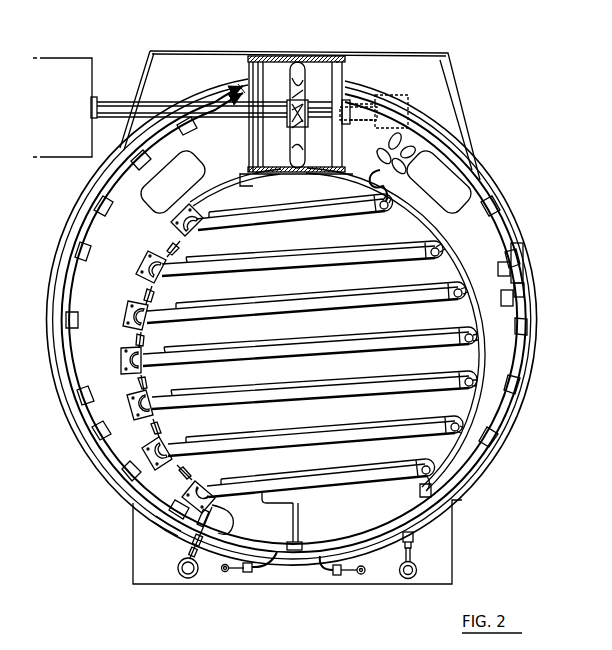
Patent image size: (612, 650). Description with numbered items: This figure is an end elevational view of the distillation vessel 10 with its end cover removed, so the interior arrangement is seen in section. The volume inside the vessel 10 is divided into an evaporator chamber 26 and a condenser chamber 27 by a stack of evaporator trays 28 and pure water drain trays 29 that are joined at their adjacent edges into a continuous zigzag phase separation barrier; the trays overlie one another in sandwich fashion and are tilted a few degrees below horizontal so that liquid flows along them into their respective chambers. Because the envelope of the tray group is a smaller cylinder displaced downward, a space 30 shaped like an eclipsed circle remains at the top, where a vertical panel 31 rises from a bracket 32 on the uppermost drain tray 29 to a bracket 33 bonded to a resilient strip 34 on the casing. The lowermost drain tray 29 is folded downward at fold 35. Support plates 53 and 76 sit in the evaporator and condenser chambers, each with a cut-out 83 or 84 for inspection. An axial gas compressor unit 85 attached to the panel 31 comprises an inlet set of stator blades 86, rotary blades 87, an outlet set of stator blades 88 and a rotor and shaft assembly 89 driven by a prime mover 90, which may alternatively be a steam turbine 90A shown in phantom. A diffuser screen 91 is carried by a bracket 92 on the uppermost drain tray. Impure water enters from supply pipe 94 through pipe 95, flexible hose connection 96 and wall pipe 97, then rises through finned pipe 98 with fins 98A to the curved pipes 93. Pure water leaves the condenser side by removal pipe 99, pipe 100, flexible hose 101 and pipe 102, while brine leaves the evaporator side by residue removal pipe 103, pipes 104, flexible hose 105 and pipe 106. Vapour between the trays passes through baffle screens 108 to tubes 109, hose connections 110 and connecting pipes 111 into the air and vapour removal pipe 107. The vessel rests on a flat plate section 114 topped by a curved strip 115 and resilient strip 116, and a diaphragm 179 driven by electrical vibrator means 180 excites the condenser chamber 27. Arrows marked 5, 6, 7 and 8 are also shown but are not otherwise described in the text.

The section line 5-5 / bar 5 is at (417, 272).
The bar end direction arrow 6 is at (419, 340).
The housing side wall 7 is at (133, 87).
The bottom plate 8 is at (305, 531).
The vessel 10 is at (467, 233).
The evaporator chamber 26 is at (257, 517).
The condenser chamber 27 is at (356, 523).
The evaporator trays 28 is at (378, 438).
The pure water drain trays 29 is at (253, 455).
The space 30 is at (220, 140).
The panel 31 is at (260, 75).
The bracket 32 is at (300, 184).
The bracket 33 is at (249, 62).
The strip of resilient material 34 is at (298, 53).
The fold 35 is at (299, 510).
The support plate 53 is at (120, 240).
The support plate 76 is at (505, 222).
The cut-out 83 is at (185, 143).
The cut-out 84 is at (463, 193).
The axial gas compressor unit 85 is at (376, 48).
The inlet set of stator blades 86 is at (263, 70).
The set of rotary blades 87 is at (302, 70).
The outlet set of stator blades 88 is at (338, 75).
The rotor and shaft assembly 89 is at (120, 107).
The prime mover 90 is at (68, 70).
The steam turbine 90A is at (408, 100).
The diffuser screen 91 is at (248, 80).
The bracket 92 is at (227, 193).
The pipes 93 is at (491, 360).
The impure water supply pipe 94 is at (417, 572).
The pipe 95 is at (413, 557).
The flexible hose connection 96 is at (413, 543).
The pipe 97 is at (409, 534).
The pipe 98 is at (423, 143).
The fins 98A is at (416, 155).
The pure water removal pipe 99 is at (362, 574).
The pipe 100 is at (321, 571).
The flexible hose 101 is at (335, 578).
The pipe 102 is at (348, 576).
The residue removal pipe 103 is at (224, 572).
The pipes 104 is at (259, 569).
The flexible hose 105 is at (248, 574).
The pipe 106 is at (236, 572).
The air and vapour removal pipe 107 is at (180, 575).
The baffle screens 108 is at (137, 410).
The tubes 109 is at (190, 544).
The hose connections 110 is at (190, 552).
The connecting pipes 111 is at (192, 558).
The flat plate section 114 is at (137, 531).
The flat strip 115 is at (147, 520).
The flat strip of resilient material 116 is at (133, 505).
The diaphragm 179 is at (524, 272).
The electrical vibrator means 180 is at (524, 288).